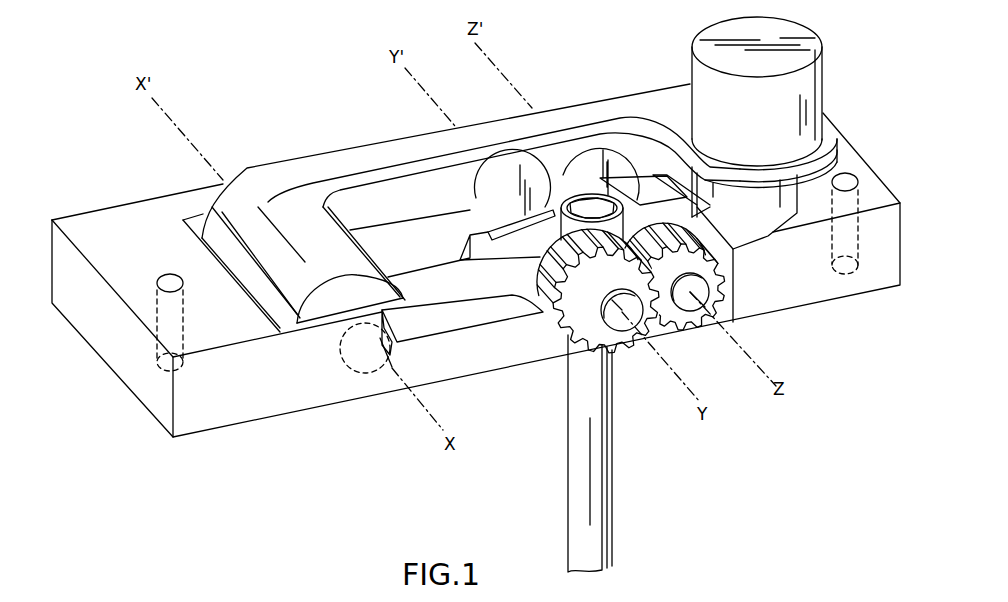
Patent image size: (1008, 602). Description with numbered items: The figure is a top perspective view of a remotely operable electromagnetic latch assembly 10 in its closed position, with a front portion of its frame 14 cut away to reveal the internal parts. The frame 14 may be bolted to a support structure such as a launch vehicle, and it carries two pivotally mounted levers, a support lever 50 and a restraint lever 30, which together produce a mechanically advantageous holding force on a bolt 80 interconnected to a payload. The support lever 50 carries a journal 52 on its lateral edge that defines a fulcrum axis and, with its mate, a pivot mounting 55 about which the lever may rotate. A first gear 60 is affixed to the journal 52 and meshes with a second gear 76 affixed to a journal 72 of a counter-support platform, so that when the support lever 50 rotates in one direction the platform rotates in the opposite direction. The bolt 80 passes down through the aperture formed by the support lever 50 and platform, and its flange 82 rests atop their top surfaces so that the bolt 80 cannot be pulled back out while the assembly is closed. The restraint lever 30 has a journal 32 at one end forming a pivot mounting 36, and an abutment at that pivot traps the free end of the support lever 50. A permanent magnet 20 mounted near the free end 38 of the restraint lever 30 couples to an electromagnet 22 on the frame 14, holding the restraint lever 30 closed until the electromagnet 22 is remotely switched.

The electromagnetic latch assembly 10 is at (96, 134).
The frame 14 is at (258, 398).
The permanent magnet 20 is at (812, 88).
The electromagnet 22 is at (800, 187).
The restraint lever 30 is at (374, 146).
The first journal 32 is at (392, 347).
The pivot mounting 36 is at (370, 350).
The free end 38 is at (822, 137).
The support lever 50 is at (480, 318).
The first journal 52 is at (610, 352).
The pivot mounting 55 is at (623, 315).
The first gear 60 is at (572, 315).
The first journal 72 is at (730, 300).
The second gear 76 is at (727, 284).
The bolt 80 is at (592, 556).
The flange 82 is at (558, 248).